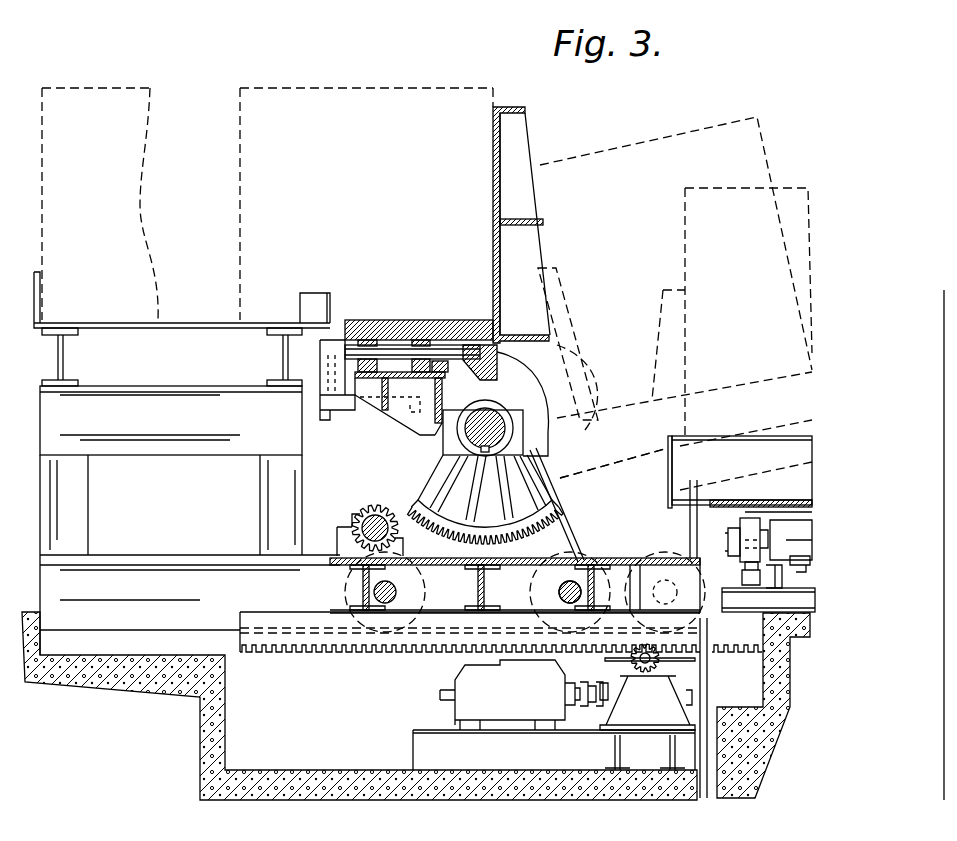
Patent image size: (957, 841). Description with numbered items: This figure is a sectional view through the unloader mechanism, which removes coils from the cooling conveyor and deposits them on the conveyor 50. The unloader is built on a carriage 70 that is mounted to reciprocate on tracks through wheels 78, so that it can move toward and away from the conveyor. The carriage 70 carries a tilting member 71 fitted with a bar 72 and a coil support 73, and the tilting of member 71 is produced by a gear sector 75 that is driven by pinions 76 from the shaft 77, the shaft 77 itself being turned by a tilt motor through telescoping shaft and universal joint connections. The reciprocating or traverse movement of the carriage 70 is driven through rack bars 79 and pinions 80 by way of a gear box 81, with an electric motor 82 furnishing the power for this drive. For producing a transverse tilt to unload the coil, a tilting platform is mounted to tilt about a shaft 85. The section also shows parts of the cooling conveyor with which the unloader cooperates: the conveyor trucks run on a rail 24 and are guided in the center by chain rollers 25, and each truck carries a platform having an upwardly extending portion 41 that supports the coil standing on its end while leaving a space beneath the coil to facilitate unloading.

The rail 24 is at (742, 584).
The chain rollers 25 is at (792, 572).
The upwardly extending portion 41 is at (685, 474).
The conveyor 50 is at (180, 324).
The carriage 70 is at (568, 586).
The tilting member 71 is at (573, 358).
The bar 72 is at (548, 253).
The coil support 73 is at (408, 320).
The gear sector 75 is at (407, 516).
The pinions 76 is at (358, 518).
The shaft 77 is at (342, 528).
The wheels 78 is at (592, 562).
The rack bars 79 is at (406, 652).
The pinions 80 is at (665, 668).
The gear box 81 is at (680, 692).
The electric motor 82 is at (475, 695).
The shaft 85 is at (447, 352).